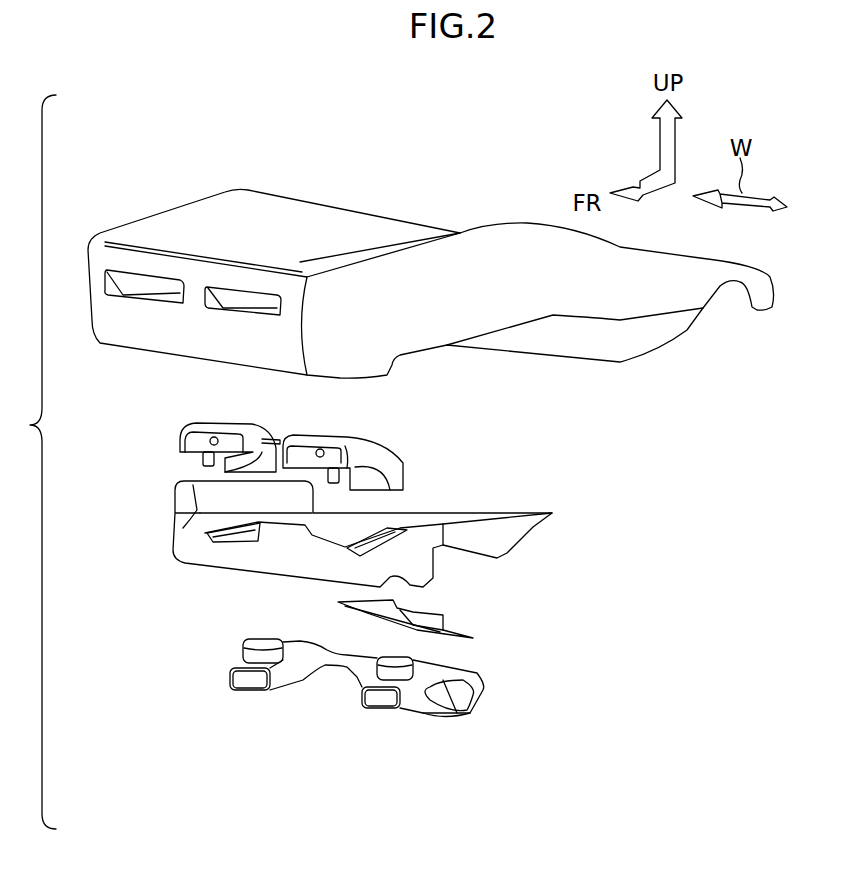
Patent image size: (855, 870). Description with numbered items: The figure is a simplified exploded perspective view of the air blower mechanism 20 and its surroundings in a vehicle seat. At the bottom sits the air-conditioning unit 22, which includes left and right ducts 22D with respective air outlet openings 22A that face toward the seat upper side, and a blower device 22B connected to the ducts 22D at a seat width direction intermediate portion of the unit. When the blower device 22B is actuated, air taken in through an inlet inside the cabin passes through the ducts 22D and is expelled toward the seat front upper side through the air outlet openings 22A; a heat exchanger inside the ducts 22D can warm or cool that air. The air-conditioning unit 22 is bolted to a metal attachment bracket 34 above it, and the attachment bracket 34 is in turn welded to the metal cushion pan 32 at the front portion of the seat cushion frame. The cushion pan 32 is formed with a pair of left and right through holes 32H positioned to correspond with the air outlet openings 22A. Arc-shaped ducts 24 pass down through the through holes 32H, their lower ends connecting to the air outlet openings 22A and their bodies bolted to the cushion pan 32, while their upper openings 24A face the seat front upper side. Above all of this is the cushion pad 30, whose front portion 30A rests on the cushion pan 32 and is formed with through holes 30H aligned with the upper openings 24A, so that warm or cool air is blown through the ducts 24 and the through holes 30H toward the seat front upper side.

The air blower mechanism 20 is at (458, 777).
The air-conditioning unit 22 is at (547, 700).
The air outlet openings 22A is at (262, 640).
The blower device 22B is at (440, 713).
The ducts 22D is at (303, 677).
The ducts 24 is at (180, 432).
The upper openings 24A is at (212, 437).
The cushion pad 30 is at (385, 193).
The front portion 30A is at (257, 252).
The through holes 30H is at (140, 296).
The cushion pan 32 is at (552, 542).
The through holes 32H is at (240, 533).
The attachment bracket 34 is at (455, 635).